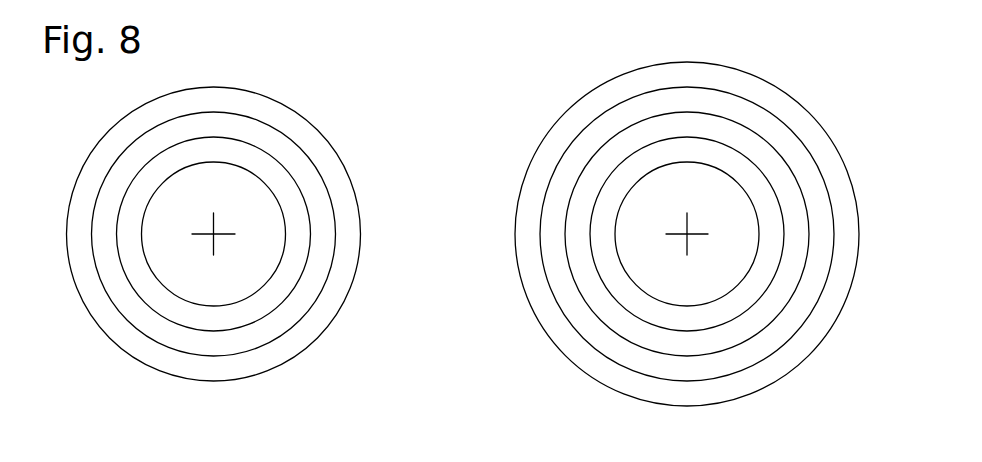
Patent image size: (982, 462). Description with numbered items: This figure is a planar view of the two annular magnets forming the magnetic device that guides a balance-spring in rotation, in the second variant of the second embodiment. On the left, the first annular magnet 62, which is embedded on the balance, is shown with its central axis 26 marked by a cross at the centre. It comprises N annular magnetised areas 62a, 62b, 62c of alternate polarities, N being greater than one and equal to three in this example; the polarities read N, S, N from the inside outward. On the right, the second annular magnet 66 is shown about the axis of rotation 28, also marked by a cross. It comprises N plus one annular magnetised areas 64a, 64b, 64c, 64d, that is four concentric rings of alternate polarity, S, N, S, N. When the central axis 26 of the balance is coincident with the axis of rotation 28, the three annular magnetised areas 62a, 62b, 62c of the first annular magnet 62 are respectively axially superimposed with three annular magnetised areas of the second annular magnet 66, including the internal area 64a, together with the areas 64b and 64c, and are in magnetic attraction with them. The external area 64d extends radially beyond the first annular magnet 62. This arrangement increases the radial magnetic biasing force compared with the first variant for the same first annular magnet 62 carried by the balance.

The first annular magnet 62 is at (78, 322).
The annular magnetised area 62a is at (272, 296).
The annular magnetised area 62b is at (307, 173).
The annular magnetised area 62c is at (243, 103).
The central axis 26 is at (213, 234).
The second annular magnet 66 is at (523, 322).
The internal area 64a is at (757, 185).
The annular magnetised area 64b is at (750, 143).
The annular magnetised area 64c is at (597, 335).
The external area 64d is at (593, 107).
The axis of rotation 28 is at (687, 234).